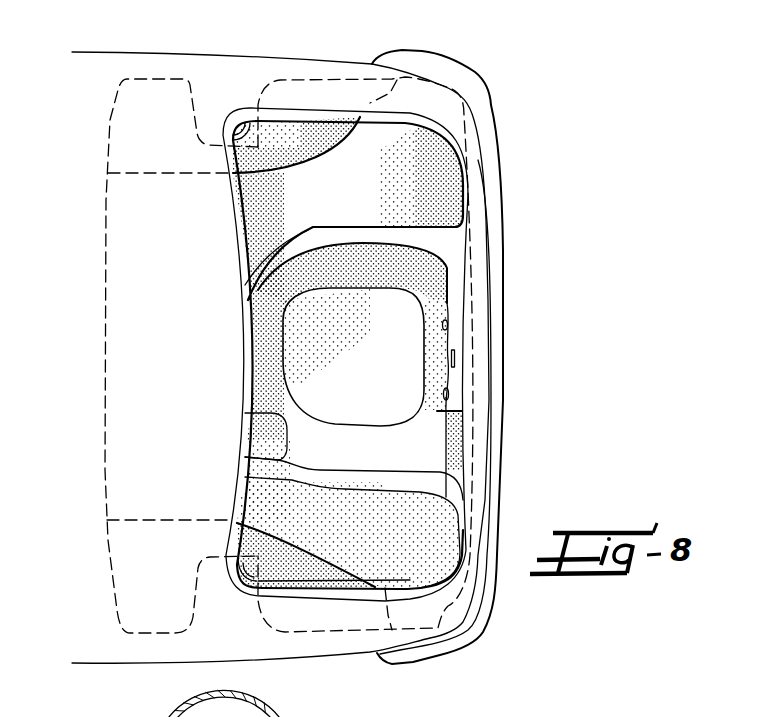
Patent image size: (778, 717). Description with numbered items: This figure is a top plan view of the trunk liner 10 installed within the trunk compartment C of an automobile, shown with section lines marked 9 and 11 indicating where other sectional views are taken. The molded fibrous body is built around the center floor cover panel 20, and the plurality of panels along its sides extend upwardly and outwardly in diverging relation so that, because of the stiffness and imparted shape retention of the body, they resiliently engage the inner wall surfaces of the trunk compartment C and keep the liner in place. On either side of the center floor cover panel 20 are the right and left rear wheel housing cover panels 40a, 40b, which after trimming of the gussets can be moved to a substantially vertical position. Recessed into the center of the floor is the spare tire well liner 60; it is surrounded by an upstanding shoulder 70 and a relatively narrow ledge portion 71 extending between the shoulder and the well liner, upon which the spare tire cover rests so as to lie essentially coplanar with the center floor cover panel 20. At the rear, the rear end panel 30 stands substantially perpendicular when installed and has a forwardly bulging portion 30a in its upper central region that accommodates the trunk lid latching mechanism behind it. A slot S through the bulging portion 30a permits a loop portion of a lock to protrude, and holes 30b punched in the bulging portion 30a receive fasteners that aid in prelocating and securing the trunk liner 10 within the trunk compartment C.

The trunk liner 10 is at (414, 14).
The outer shell 11 is at (520, 622).
The section line 9- 9 is at (553, 262).
The right rear wheel housing cover panel 40a is at (253, 147).
The left rear wheel housing cover panel 40b is at (246, 548).
The center floor cover panel 20 is at (272, 222).
The trunk compartment C is at (449, 160).
The spare tire well liner 60 is at (257, 383).
The ledge portion 71 is at (278, 413).
The upstanding shoulder 70 is at (258, 443).
The rear end panel 30 is at (450, 450).
The forwardly bulging portion 30a is at (453, 340).
The holes 30b is at (452, 393).
The slot S is at (458, 363).